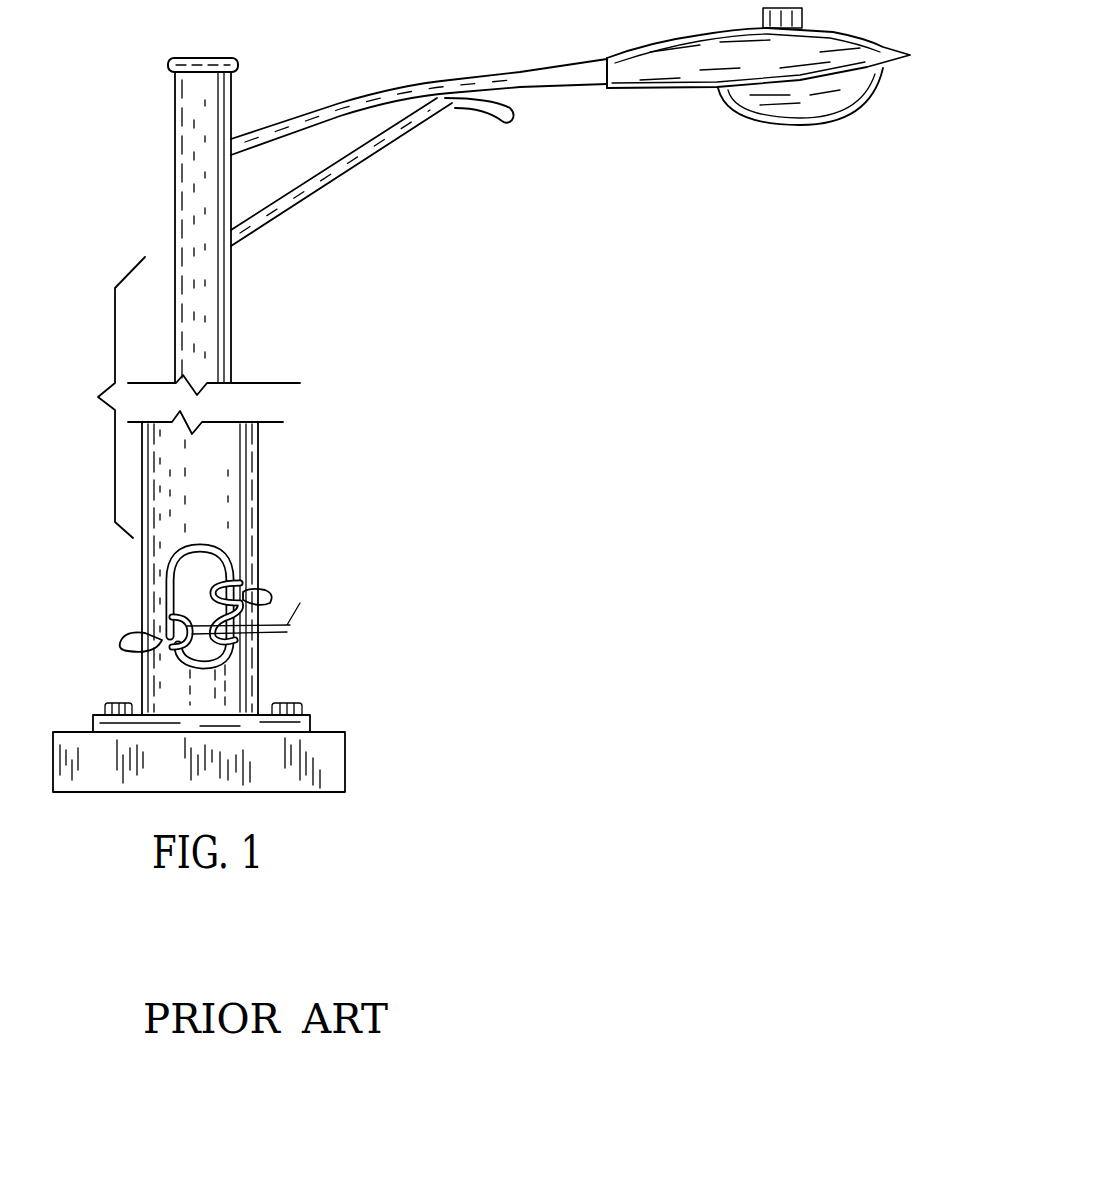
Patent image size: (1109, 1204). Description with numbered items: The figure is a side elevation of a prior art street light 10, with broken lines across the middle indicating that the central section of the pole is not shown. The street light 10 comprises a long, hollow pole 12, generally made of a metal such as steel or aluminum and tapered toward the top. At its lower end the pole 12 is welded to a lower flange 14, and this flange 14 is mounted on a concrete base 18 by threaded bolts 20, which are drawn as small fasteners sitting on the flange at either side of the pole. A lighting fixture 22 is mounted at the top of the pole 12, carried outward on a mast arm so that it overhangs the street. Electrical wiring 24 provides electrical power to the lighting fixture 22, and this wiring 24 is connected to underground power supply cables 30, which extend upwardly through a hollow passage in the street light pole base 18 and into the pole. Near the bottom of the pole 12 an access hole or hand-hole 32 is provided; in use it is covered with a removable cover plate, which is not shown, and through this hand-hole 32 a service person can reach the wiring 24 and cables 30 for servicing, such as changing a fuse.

The street light 10 is at (315, 313).
The pole 12 is at (178, 157).
The lower flange 14 is at (312, 718).
The concrete base 18 is at (347, 745).
The threaded bolts 20 is at (120, 705).
The lighting fixture 22 is at (804, 150).
The electrical wiring 24 is at (245, 584).
The underground power supply cables 30 is at (155, 626).
The hand-hole 32 is at (225, 547).